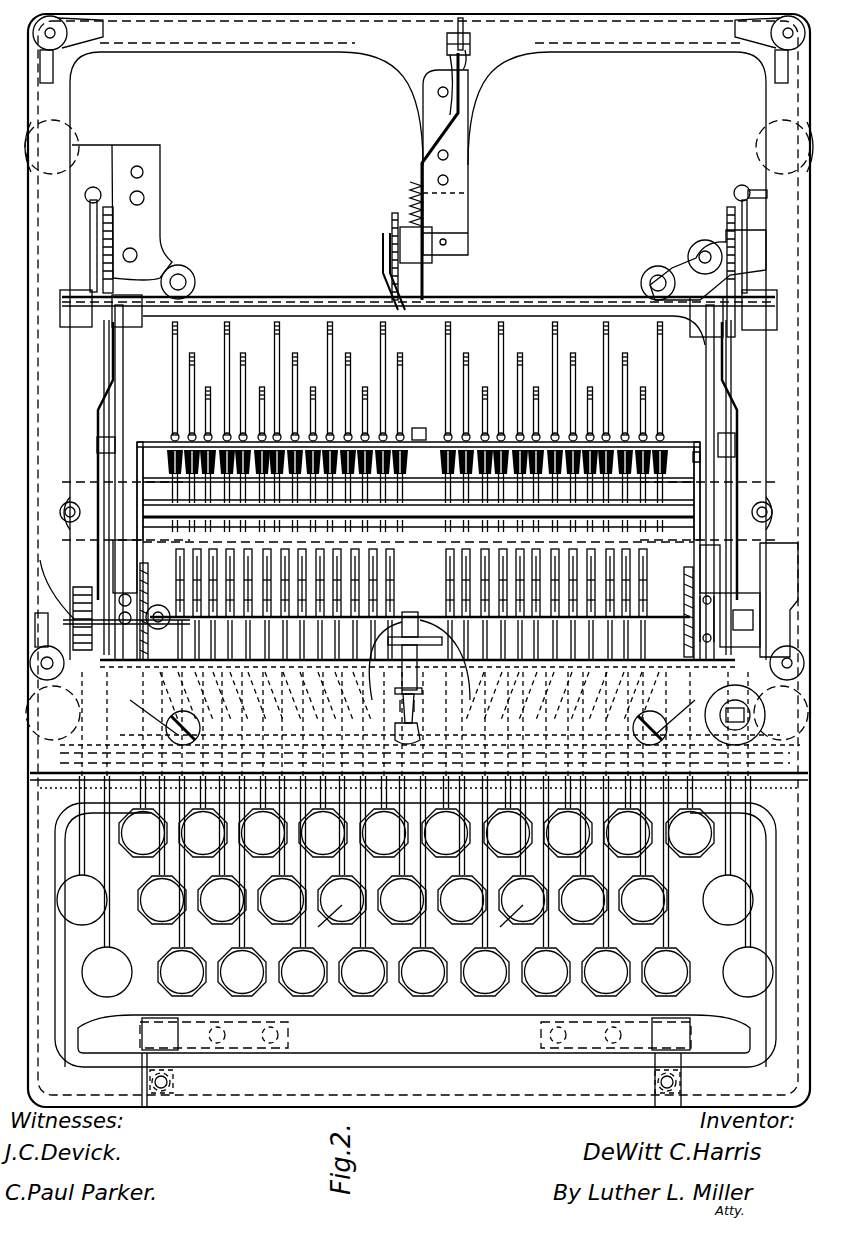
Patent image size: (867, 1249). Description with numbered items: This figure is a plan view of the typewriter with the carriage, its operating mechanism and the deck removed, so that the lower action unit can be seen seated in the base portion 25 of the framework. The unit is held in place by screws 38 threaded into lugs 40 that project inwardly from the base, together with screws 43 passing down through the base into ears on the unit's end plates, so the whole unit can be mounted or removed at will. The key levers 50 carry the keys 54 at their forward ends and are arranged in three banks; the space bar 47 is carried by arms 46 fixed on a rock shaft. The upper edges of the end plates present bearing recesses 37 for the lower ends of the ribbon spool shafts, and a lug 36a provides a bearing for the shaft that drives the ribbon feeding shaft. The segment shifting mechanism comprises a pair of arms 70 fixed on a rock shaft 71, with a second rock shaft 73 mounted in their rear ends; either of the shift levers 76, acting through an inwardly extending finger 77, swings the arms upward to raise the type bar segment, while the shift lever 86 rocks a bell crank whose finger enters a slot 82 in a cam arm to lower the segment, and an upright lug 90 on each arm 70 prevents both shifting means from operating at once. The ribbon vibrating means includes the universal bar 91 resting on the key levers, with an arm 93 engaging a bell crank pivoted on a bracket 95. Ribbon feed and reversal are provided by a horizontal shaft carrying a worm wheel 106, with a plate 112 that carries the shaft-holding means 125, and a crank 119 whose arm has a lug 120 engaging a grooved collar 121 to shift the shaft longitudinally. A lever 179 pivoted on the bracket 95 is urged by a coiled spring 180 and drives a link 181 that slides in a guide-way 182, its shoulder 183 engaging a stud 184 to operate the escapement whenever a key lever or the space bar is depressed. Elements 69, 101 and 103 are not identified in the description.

The base portion 25 is at (535, 150).
The lug 36a is at (40, 600).
The bearing recesses 37 is at (140, 540).
The screws 38 is at (60, 505).
The lugs 40 is at (97, 460).
The screws 43 is at (407, 711).
The arms 46 is at (132, 960).
The space bar 47 is at (414, 1061).
The key levers 50 is at (416, 925).
The keys 54 is at (416, 834).
The type guide 69 is at (419, 428).
The arms 70 is at (124, 373).
The rock shaft 71 is at (152, 440).
The rock shaft 73 is at (572, 298).
The shift levers 76 is at (104, 590).
The finger 77 is at (104, 432).
The slot 82 is at (60, 310).
The shift lever 86 is at (85, 862).
The upright lug 90 is at (455, 95).
The universal bar 91 is at (497, 440).
The arm 93 is at (383, 280).
The bracket 95 is at (455, 208).
The link 101 is at (696, 450).
The key lever 103 is at (430, 708).
The worm wheel 106 is at (75, 600).
The plate 112 is at (705, 617).
The crank 119 is at (422, 705).
The lug 120 is at (414, 678).
The grooved collar 121 is at (430, 705).
The shaft-holding means 125 is at (760, 620).
The lever 179 is at (392, 218).
The coiled spring 180 is at (408, 200).
The link 181 is at (445, 115).
The guide-way 182 is at (466, 62).
The shoulder 183 is at (450, 50).
The stud 184 is at (472, 52).